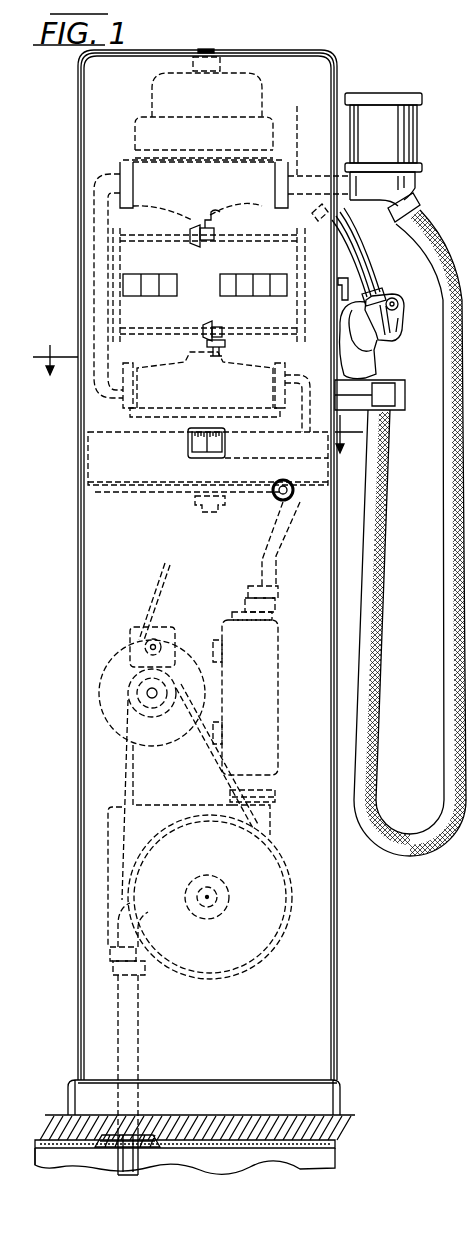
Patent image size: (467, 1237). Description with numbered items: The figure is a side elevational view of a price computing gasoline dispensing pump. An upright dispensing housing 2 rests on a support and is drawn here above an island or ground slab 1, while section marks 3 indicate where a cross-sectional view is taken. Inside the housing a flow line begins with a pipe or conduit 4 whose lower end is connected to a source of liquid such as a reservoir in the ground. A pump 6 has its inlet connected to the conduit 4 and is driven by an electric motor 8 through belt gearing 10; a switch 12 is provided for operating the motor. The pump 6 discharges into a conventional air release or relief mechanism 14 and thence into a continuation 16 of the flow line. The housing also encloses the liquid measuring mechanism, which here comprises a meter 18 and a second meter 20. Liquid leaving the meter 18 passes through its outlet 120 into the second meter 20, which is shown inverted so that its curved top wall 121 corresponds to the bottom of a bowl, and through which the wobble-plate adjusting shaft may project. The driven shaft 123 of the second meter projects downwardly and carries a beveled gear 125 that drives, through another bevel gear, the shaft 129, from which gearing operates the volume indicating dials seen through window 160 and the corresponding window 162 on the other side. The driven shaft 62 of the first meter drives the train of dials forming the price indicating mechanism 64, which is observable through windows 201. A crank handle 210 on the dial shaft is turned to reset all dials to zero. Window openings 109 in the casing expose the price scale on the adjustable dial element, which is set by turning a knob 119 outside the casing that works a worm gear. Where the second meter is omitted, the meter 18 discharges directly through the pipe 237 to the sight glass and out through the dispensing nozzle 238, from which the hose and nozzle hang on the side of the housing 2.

The island base 1 is at (335, 1157).
The dispensing housing 2 is at (309, 985).
The section line 3 is at (198, 390).
The pipe or conduit 4 is at (125, 1025).
The pump 6 is at (108, 833).
The electric motor 8 is at (108, 697).
The belt gearing 10 is at (122, 778).
The switch 12 is at (172, 573).
The air release mechanism 14 is at (272, 646).
The flow line continuation 16 is at (262, 549).
The meter 18 is at (142, 414).
The second meter 20 is at (135, 135).
The driven shaft 62 is at (221, 352).
The price indicating mechanism 64 is at (283, 284).
The window openings 109 is at (190, 450).
The knob 119 is at (293, 496).
The outlet 120 is at (112, 262).
The curved top wall 121 is at (249, 73).
The driven shaft 123 is at (214, 216).
The beveled gear 125 is at (222, 236).
The shaft 129 is at (145, 234).
The window 160 is at (196, 340).
The window 162 is at (123, 286).
The window 201 is at (221, 302).
The crank handle 210 is at (358, 270).
The pipe 237 is at (351, 145).
The dispensing nozzle 238 is at (345, 282).